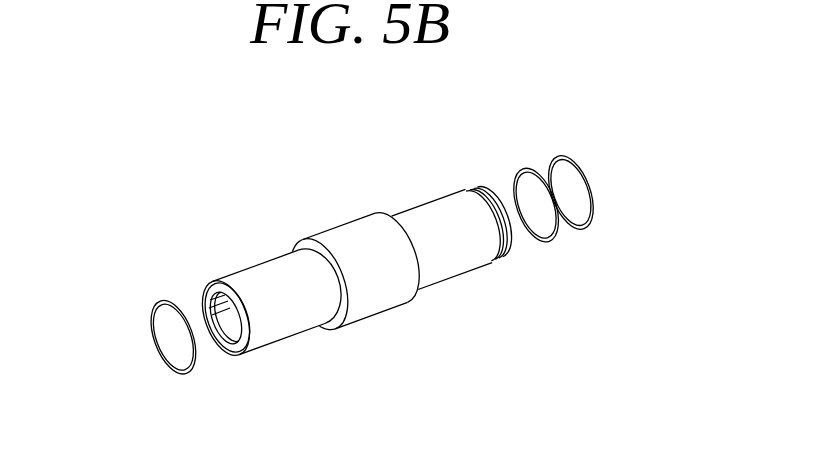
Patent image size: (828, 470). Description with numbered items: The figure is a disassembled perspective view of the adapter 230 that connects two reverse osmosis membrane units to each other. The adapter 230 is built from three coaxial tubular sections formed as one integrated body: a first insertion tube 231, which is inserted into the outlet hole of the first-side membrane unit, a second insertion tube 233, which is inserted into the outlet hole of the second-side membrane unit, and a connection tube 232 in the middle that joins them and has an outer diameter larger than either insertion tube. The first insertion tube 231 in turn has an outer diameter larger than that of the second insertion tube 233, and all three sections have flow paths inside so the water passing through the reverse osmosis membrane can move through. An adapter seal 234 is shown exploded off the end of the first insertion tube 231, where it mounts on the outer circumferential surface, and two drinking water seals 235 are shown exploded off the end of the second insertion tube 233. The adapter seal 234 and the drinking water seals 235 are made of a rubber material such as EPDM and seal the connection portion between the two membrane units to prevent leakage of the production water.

The adapter 230 is at (336, 192).
The first insertion tube 231 is at (275, 322).
The connection tube 232 is at (363, 300).
The second insertion tube 233 is at (438, 263).
The adapter seal 234 is at (163, 298).
The drinking water seals 235 is at (550, 160).